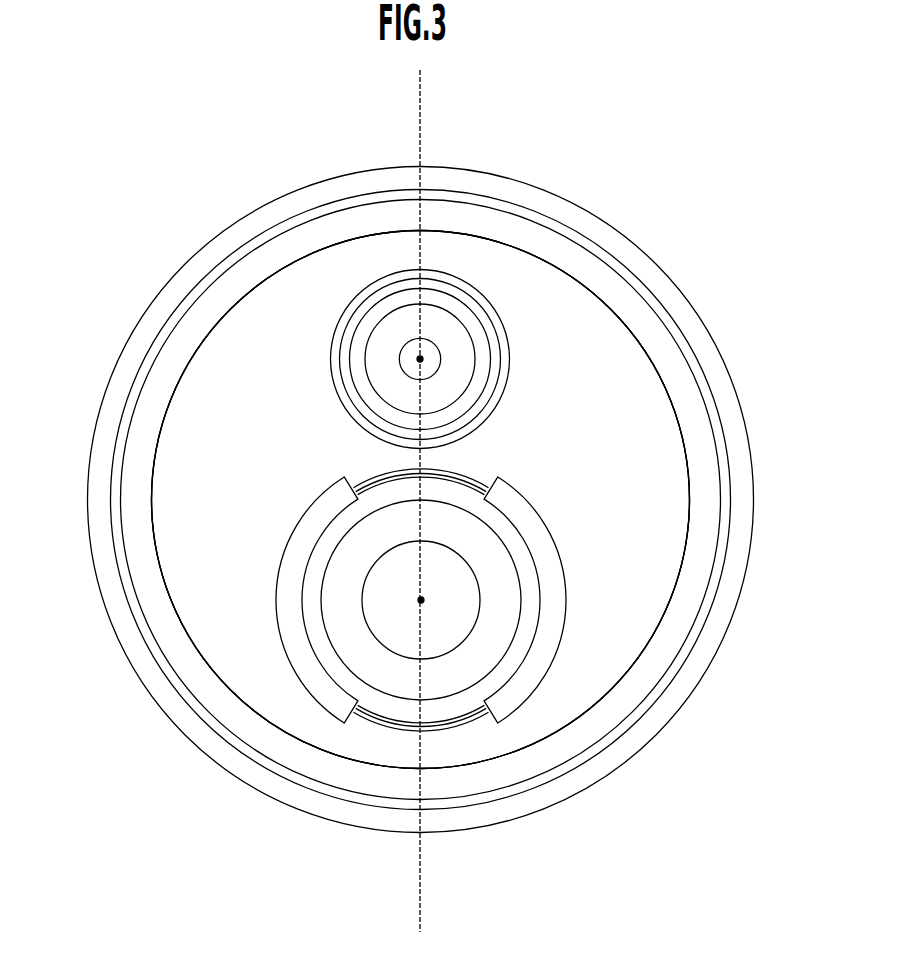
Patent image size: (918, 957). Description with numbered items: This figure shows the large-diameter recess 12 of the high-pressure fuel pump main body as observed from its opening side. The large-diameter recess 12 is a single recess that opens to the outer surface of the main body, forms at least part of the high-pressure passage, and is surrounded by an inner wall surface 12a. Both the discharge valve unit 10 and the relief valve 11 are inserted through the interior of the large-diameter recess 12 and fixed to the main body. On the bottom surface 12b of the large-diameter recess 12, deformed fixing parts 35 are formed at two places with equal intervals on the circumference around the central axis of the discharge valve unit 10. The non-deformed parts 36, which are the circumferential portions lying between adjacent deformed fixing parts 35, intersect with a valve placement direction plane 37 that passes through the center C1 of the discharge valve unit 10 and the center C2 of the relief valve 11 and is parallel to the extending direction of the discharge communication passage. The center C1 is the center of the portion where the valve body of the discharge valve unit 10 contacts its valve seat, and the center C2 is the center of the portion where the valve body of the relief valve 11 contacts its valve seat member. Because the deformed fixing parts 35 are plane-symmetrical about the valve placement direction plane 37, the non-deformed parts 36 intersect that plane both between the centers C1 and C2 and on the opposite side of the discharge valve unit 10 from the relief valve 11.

The discharge valve unit 10 is at (495, 593).
The relief valve 11 is at (468, 368).
The large-diameter recess 12 is at (238, 449).
The inner wall surface 12a is at (167, 578).
The bottom surface 12b is at (627, 433).
The deformed fixing parts 35 is at (292, 612).
The non-deformed parts 36 is at (370, 470).
The valve placement direction plane 37 is at (422, 98).
The center of the discharge valve unit C1 is at (427, 590).
The center of the relief valve C2 is at (423, 353).